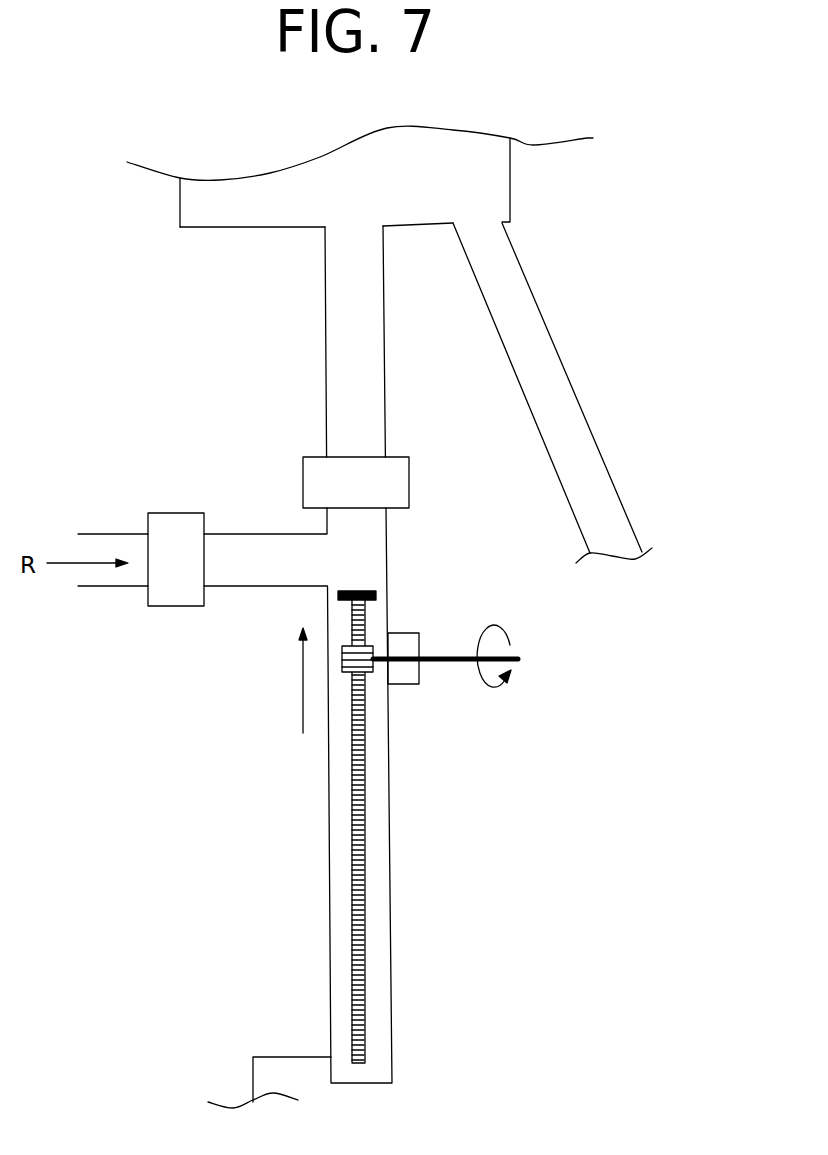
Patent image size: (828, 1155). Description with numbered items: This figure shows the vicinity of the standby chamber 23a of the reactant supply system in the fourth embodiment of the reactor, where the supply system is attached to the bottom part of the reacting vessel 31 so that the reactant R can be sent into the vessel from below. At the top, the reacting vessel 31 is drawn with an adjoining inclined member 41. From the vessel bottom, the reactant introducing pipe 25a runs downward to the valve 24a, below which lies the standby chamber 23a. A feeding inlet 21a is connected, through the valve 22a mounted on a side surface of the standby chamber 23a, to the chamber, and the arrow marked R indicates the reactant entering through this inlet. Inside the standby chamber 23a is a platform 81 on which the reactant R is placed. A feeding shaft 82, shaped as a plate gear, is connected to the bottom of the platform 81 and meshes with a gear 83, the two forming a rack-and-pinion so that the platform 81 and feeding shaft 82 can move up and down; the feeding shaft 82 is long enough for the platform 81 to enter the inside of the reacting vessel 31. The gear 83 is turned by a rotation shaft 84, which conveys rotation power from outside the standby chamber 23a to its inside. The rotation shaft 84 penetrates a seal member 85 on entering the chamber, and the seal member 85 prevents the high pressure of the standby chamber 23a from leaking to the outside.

The reacting vessel 31 is at (513, 185).
The inclined pipe 41 is at (567, 372).
The reactant introducing pipe 25a is at (386, 352).
The valve 24a is at (409, 480).
The standby chamber 23a is at (387, 545).
The valve 22a is at (178, 607).
The feeding inlet 21a is at (115, 533).
The platform 81 is at (377, 596).
The feeding shaft 82 is at (365, 790).
The gear 83 is at (347, 673).
The rotation shaft 84 is at (450, 653).
The seal member 85 is at (420, 677).